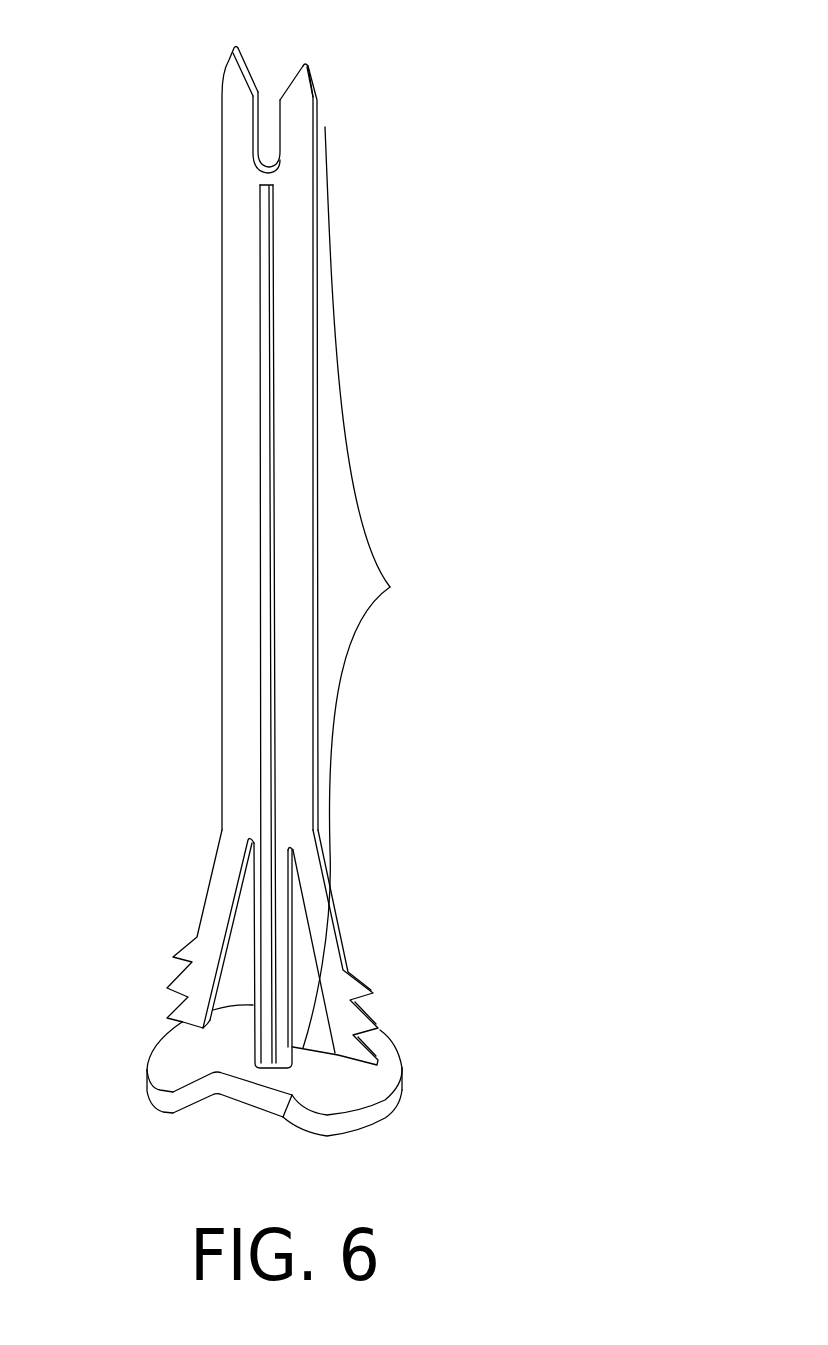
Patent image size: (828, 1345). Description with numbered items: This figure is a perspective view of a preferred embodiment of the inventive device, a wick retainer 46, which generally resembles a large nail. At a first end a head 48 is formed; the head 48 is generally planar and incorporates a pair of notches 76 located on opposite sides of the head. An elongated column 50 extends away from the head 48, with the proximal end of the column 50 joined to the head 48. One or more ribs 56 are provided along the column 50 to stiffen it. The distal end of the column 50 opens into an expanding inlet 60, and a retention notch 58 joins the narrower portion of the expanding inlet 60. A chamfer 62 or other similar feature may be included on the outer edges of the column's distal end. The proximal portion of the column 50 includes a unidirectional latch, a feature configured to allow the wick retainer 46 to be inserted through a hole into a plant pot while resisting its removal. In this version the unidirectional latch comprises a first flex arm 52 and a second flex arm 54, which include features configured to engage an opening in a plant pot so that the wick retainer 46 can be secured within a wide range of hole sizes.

The wick retainer 46 is at (372, 591).
The head 48 is at (280, 1092).
The elongated column 50 is at (390, 587).
The first flex arm 52 is at (205, 930).
The second flex arm 54 is at (337, 972).
The rib 56 is at (270, 358).
The retention notch 58 is at (253, 143).
The expanding inlet 60 is at (270, 63).
The chamfer 62 is at (317, 98).
The notch 76 is at (242, 1113).